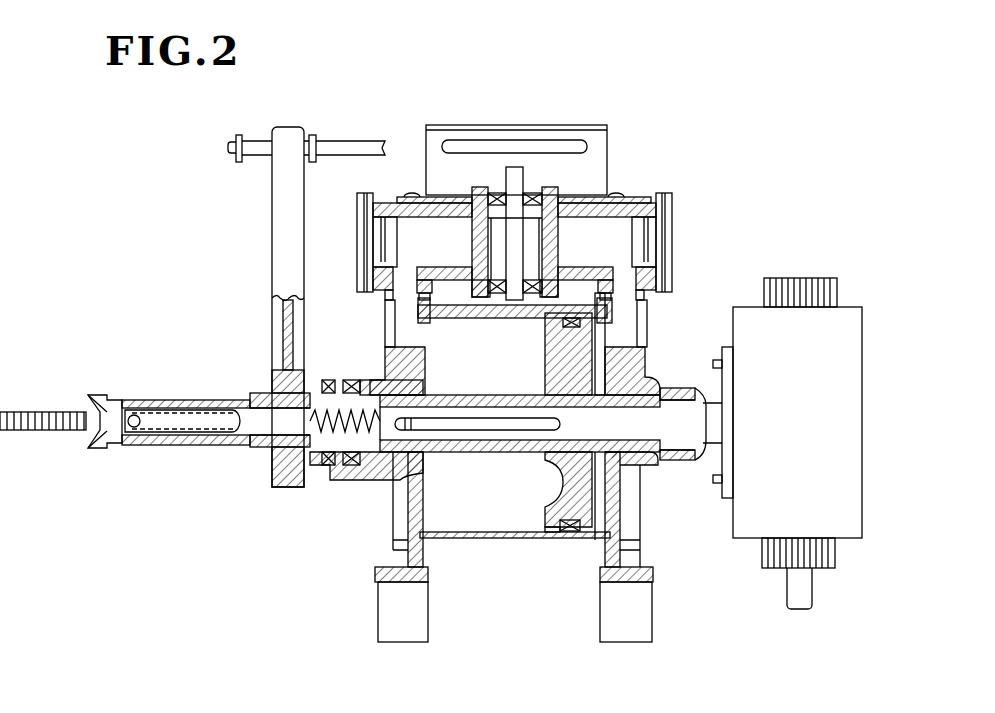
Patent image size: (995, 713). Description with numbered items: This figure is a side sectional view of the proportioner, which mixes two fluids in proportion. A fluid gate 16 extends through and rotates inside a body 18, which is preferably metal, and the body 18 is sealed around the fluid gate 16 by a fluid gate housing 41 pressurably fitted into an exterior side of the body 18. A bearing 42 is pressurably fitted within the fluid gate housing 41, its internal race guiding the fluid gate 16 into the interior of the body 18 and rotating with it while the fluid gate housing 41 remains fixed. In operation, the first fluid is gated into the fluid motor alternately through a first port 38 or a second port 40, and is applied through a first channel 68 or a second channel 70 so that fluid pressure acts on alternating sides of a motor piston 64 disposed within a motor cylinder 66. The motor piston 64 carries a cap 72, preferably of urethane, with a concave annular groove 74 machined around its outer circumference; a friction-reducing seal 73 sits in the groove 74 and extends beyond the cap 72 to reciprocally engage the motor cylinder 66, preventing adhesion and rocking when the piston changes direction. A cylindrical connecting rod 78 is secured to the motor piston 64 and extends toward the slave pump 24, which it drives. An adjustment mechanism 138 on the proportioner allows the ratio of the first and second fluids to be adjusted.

The fluid gate 16 is at (525, 177).
The body 18 is at (475, 193).
The slave pump 24 is at (803, 353).
The first port 38 is at (415, 238).
The second port 40 is at (612, 237).
The fluid gate housing 41 is at (493, 197).
The bearing 42 is at (493, 282).
The motor piston 64 is at (557, 377).
The motor cylinder 66 is at (502, 494).
The first channel 68 is at (402, 315).
The second channel 70 is at (623, 313).
The cap 72 is at (550, 514).
The seal 73 is at (573, 532).
The concave annular groove 74 is at (547, 527).
The connecting rod 78 is at (648, 428).
The adjustment mechanism 138 is at (264, 428).